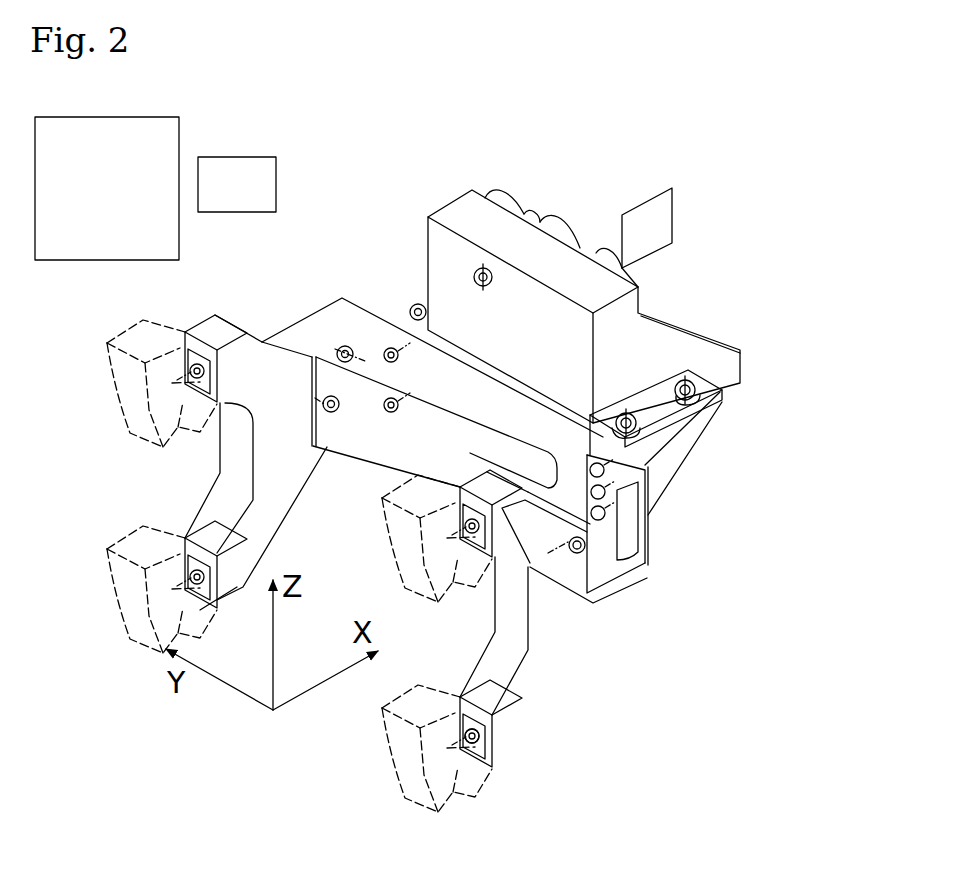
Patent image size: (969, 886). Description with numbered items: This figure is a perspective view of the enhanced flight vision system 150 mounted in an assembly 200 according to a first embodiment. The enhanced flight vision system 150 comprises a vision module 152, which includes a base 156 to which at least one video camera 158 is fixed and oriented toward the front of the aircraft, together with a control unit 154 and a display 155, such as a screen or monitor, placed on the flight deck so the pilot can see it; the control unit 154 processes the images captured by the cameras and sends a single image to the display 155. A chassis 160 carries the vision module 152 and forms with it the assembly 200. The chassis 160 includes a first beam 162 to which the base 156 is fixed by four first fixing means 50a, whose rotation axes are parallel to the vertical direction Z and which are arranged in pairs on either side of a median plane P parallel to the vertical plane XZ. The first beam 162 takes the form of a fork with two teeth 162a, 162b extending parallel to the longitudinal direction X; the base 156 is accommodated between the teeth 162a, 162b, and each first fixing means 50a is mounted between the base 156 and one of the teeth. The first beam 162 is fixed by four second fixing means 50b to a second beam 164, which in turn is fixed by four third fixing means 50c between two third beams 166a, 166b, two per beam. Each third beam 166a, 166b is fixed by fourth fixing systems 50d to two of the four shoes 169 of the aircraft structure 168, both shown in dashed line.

The enhanced flight vision system 150 is at (621, 270).
The vision module 152 is at (655, 179).
The control unit 154 is at (262, 199).
The display 155 is at (105, 194).
The base 156 is at (667, 350).
The video camera 158 is at (553, 230).
The chassis 160 is at (433, 511).
The first beam 162 is at (615, 407).
The tooth 162a is at (711, 434).
The tooth 162b is at (530, 407).
The second beam 164 is at (409, 364).
The third beam 166a is at (577, 628).
The third beam 166b is at (300, 333).
The structure 168 is at (136, 688).
The shoe 169 is at (398, 732).
The assembly 200 is at (482, 502).
The first fixing means 50a is at (700, 385).
The second fixing means 50b is at (375, 345).
The third fixing means 50c is at (600, 553).
The fourth fixing system 50d is at (470, 742).